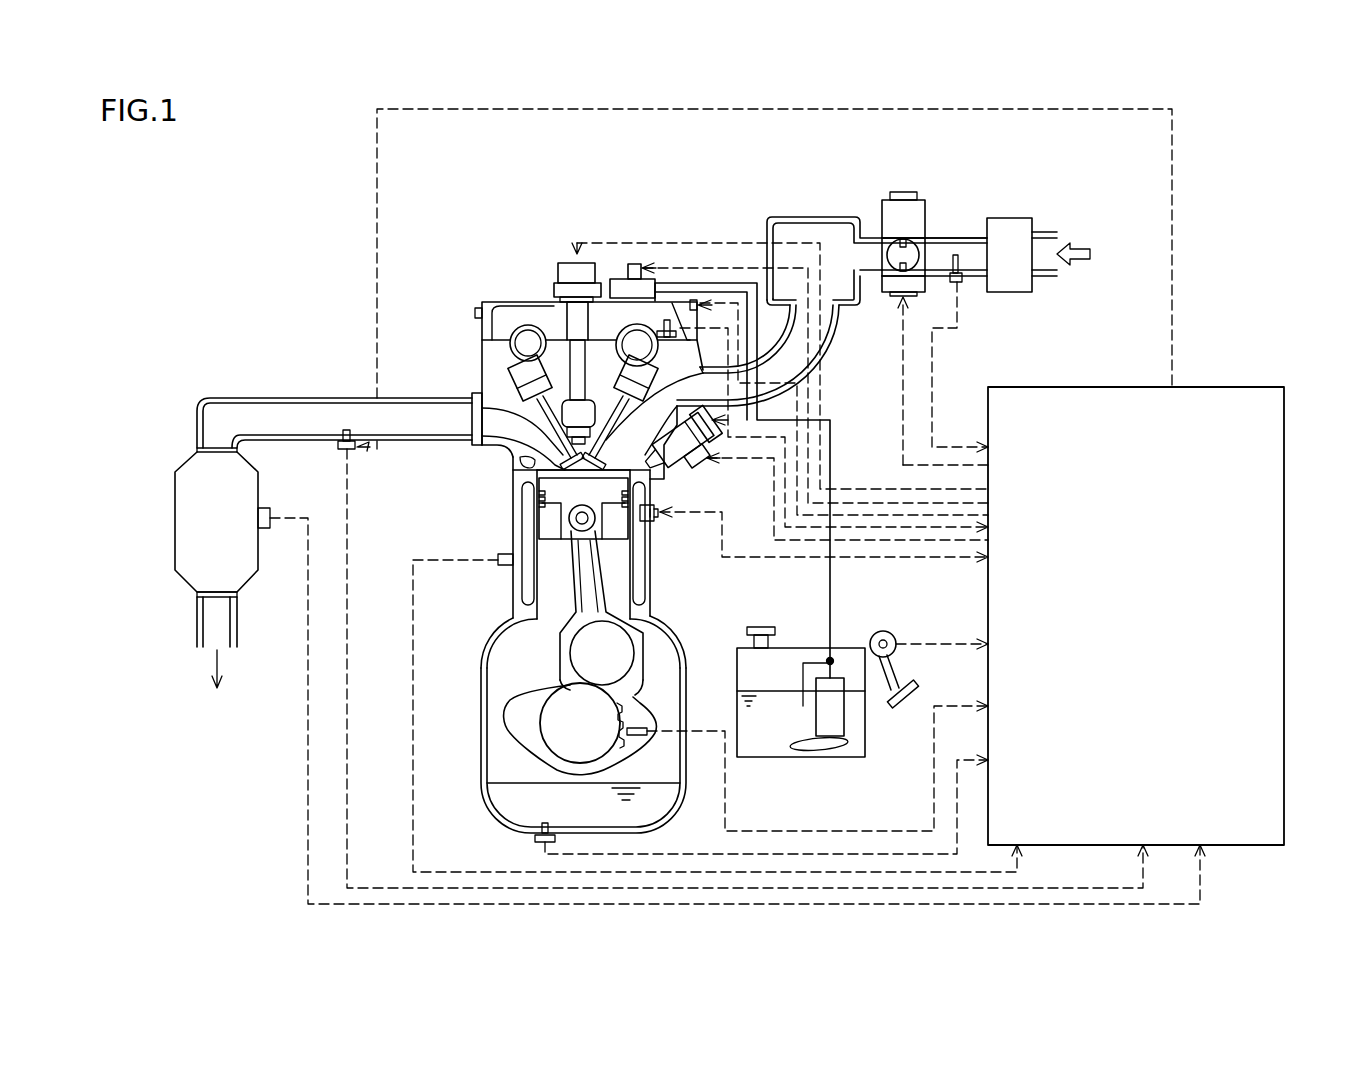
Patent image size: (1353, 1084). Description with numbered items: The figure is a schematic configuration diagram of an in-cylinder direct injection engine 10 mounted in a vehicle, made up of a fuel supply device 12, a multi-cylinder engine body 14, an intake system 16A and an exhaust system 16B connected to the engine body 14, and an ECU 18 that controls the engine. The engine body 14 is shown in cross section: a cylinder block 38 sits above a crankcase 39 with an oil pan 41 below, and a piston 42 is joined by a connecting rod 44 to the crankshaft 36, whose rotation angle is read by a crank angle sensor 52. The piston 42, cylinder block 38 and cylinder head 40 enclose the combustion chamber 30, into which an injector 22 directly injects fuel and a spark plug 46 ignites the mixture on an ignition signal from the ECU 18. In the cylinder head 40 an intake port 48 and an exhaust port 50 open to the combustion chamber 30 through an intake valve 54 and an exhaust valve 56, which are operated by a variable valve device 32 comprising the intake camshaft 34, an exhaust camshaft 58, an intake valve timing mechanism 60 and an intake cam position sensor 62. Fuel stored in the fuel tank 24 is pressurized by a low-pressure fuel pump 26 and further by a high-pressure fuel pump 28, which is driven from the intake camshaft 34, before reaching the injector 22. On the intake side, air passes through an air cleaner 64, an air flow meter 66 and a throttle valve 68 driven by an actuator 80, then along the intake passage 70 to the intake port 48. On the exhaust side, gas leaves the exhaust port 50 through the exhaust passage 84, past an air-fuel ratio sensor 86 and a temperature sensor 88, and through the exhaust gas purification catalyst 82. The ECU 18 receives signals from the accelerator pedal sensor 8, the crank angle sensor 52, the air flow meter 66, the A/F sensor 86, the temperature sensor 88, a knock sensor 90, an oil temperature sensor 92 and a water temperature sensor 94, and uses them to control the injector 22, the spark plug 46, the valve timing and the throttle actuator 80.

The accelerator pedal sensor 8 is at (895, 650).
The in-cylinder direct injection engine 10 is at (345, 170).
The fuel supply device 12 is at (838, 446).
The engine body 14 is at (668, 586).
The intake system 16A is at (815, 207).
The exhaust system 16B is at (194, 388).
The ECU 18 is at (1225, 387).
The injector 22 is at (717, 442).
The fuel tank 24 is at (800, 757).
The low-pressure fuel pump 26 is at (845, 705).
The high-pressure fuel pump 28 is at (612, 278).
The combustion chamber 30 is at (620, 479).
The variable valve device 32 is at (478, 290).
The intake camshaft 34 is at (636, 325).
The crankshaft 36 is at (560, 725).
The cylinder block 38 is at (513, 585).
The crankcase 39 is at (482, 676).
The cylinder head 40 is at (503, 383).
The oil pan 41 is at (482, 805).
The piston 42 is at (625, 527).
The connecting rod 44 is at (645, 649).
The spark plug 46 is at (512, 470).
The intake port 48 is at (717, 378).
The exhaust port 50 is at (550, 427).
The crank angle sensor 52 is at (640, 735).
The intake valve 54 is at (690, 458).
The exhaust valve 56 is at (480, 346).
The exhaust camshaft 58 is at (527, 337).
The intake valve timing mechanism 60 is at (590, 333).
The intake cam position sensor 62 is at (667, 318).
The air cleaner 64 is at (1010, 218).
The air flow meter 66 is at (962, 283).
The throttle valve 68 is at (918, 252).
The intake passage 70 is at (840, 323).
The actuator 80 is at (897, 192).
The exhaust gas purification catalyst 82 is at (180, 540).
The exhaust passage 84 is at (258, 418).
The air-fuel ratio sensor 86 is at (340, 449).
The temperature sensor 88 is at (264, 530).
The knock sensor 90 is at (502, 552).
The oil temperature sensor 92 is at (535, 838).
The water temperature sensor 94 is at (652, 514).